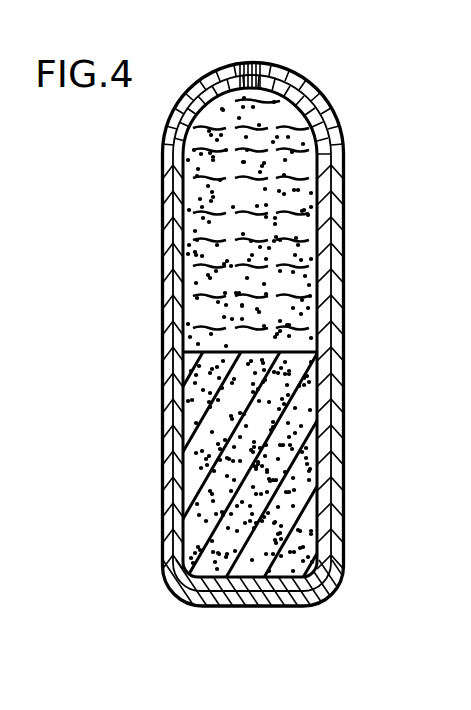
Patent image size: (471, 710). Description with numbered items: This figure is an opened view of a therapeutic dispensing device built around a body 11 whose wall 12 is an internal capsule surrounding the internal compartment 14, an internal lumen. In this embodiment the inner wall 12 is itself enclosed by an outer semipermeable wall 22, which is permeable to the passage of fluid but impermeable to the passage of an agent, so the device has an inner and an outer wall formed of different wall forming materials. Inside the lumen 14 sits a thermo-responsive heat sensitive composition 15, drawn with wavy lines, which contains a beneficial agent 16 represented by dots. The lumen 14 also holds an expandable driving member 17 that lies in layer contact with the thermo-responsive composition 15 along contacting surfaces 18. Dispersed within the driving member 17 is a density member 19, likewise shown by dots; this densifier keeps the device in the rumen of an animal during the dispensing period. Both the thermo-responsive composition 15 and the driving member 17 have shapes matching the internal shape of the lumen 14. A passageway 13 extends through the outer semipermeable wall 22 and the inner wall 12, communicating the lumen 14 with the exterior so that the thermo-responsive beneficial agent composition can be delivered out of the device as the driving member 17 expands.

The body 11 is at (344, 170).
The wall 12 is at (322, 222).
The passageway 13 is at (252, 63).
The internal compartment 14 is at (308, 313).
The thermo-responsive heat sensitive composition 15 is at (218, 148).
The beneficial agent 16 is at (210, 162).
The expandable driving member 17 is at (303, 395).
The contacting surfaces 18 is at (185, 368).
The density member 19 is at (203, 452).
The outer semipermeable wall 22 is at (333, 507).